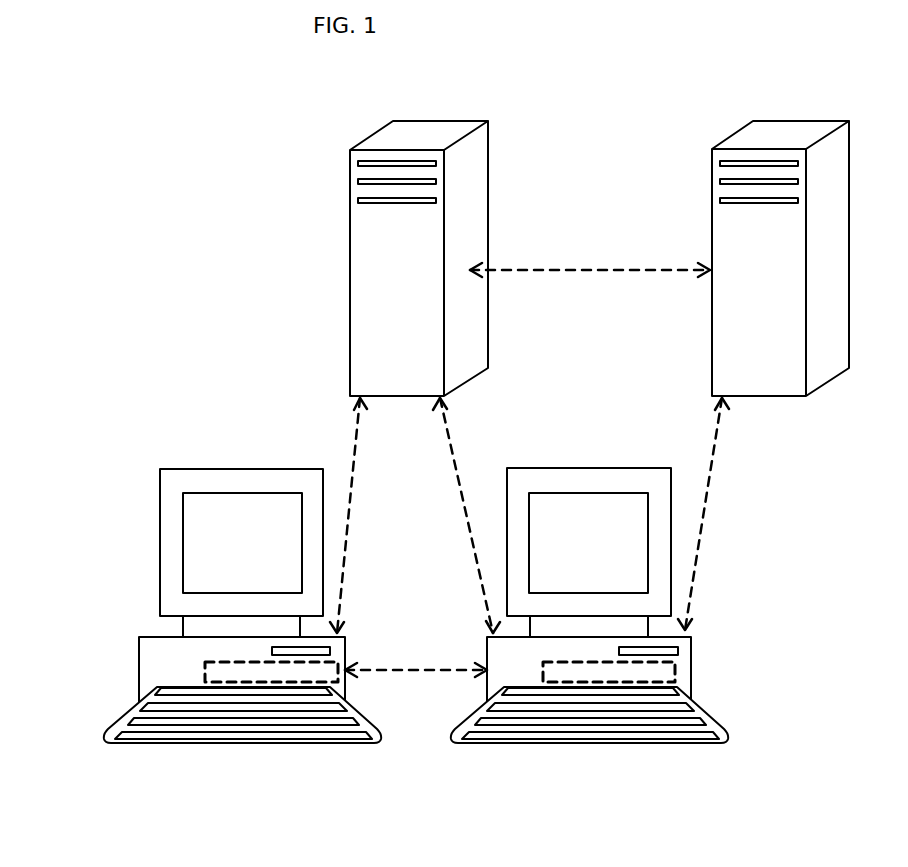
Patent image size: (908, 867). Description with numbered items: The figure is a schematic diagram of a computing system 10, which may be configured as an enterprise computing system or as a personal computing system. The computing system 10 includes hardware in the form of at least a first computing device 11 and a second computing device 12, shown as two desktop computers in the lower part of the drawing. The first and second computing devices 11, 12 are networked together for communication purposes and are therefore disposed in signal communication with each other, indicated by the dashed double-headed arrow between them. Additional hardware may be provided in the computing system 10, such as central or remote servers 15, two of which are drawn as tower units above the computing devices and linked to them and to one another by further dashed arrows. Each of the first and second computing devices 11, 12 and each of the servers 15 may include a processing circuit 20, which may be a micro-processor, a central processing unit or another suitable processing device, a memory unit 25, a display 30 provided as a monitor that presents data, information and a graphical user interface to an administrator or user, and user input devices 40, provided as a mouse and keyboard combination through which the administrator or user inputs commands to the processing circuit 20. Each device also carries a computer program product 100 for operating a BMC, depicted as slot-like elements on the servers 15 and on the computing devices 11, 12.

The computing system 10 is at (235, 288).
The first computing device 11 is at (138, 738).
The second computing device 12 is at (542, 739).
The server 15 is at (388, 143).
The processing circuit 20 is at (188, 668).
The memory unit 25 is at (218, 680).
The display 30 is at (173, 488).
The user input devices 40 is at (490, 648).
The computer program product 100 is at (358, 201).